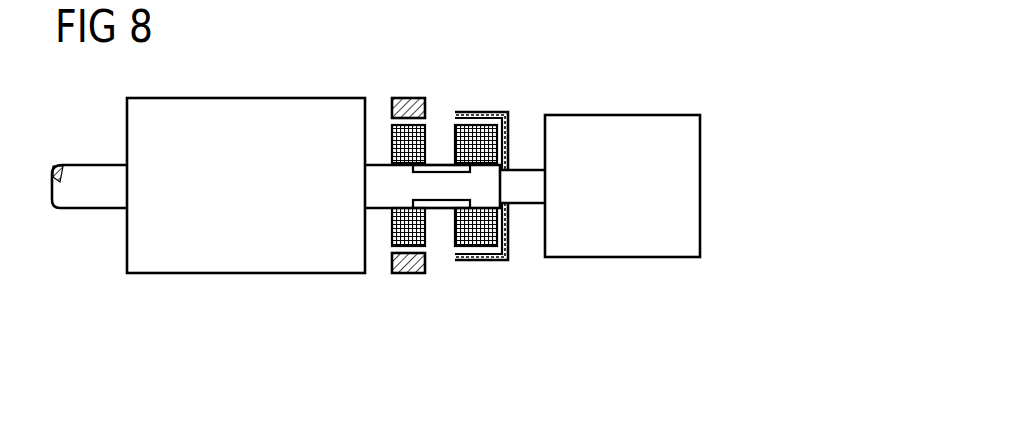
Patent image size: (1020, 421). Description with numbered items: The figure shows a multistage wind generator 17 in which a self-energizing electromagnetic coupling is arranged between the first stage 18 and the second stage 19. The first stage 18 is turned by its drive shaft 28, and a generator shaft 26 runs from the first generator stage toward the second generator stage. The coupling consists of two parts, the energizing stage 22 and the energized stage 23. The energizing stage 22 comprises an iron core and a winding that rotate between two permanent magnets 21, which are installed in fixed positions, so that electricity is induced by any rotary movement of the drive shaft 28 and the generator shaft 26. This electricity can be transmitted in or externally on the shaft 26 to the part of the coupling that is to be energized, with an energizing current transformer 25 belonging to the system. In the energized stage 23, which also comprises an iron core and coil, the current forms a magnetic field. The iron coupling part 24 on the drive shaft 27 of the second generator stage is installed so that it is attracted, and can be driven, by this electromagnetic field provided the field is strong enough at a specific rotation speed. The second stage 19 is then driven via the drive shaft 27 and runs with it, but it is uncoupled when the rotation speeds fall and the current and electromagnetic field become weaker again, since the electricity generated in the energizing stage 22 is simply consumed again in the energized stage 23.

The multistage wind generator 17 is at (376, 185).
The first stage 18 is at (256, 126).
The second stage 19 is at (617, 141).
The permanent magnets 21 is at (410, 98).
The energizing stage 22 is at (395, 230).
The energized stage 23 is at (475, 250).
The iron coupling part 24 is at (484, 185).
The energizing current transformer 25 is at (437, 208).
The generator shaft 26 is at (377, 182).
The drive shaft for the second stage 27 is at (527, 183).
The drive shaft for the first generator stage 28 is at (86, 179).